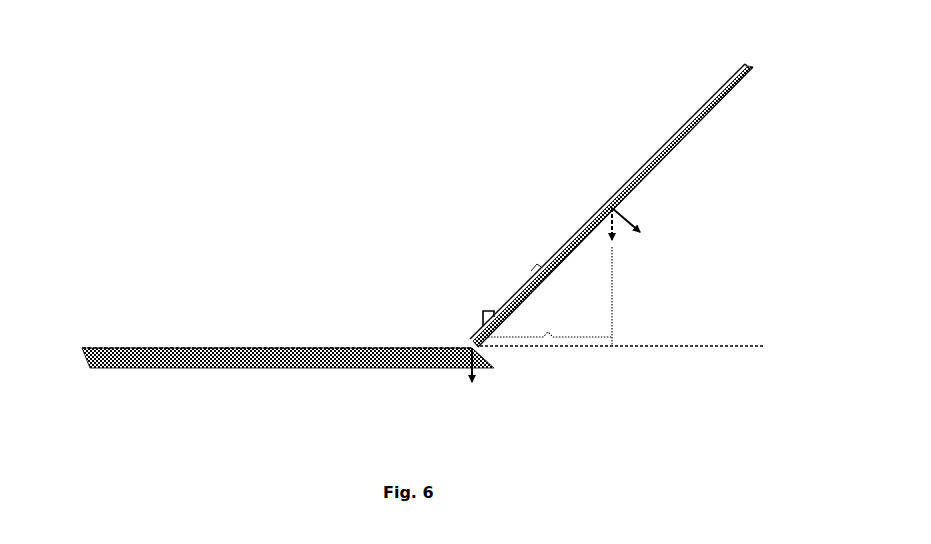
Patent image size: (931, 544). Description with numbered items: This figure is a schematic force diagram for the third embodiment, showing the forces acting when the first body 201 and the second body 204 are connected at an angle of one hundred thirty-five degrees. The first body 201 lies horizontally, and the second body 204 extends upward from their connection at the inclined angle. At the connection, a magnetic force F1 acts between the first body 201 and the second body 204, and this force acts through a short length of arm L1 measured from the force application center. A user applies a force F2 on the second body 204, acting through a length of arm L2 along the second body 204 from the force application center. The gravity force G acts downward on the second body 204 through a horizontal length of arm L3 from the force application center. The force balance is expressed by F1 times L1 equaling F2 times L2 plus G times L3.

The first body 201 is at (240, 371).
The second body 204 is at (662, 160).
The magnetic force F1 is at (456, 370).
The force applied by a user F2 is at (634, 218).
The length of arm of force F1 L1 is at (491, 338).
The length of arm of force F2 L2 is at (527, 248).
The length of arm of the gravity force L3 is at (550, 296).
The gravity force G is at (625, 229).